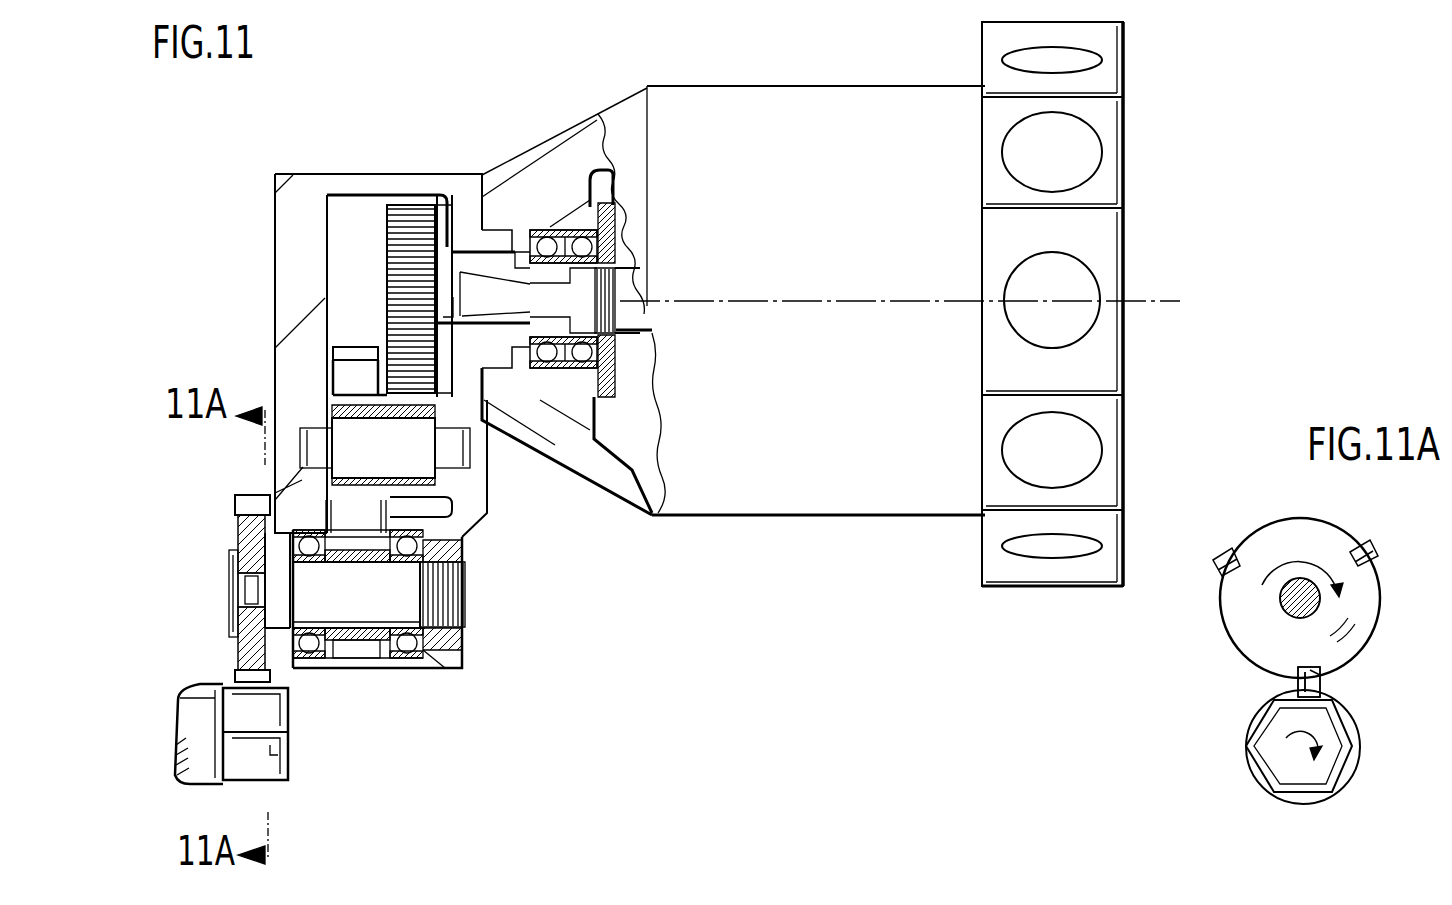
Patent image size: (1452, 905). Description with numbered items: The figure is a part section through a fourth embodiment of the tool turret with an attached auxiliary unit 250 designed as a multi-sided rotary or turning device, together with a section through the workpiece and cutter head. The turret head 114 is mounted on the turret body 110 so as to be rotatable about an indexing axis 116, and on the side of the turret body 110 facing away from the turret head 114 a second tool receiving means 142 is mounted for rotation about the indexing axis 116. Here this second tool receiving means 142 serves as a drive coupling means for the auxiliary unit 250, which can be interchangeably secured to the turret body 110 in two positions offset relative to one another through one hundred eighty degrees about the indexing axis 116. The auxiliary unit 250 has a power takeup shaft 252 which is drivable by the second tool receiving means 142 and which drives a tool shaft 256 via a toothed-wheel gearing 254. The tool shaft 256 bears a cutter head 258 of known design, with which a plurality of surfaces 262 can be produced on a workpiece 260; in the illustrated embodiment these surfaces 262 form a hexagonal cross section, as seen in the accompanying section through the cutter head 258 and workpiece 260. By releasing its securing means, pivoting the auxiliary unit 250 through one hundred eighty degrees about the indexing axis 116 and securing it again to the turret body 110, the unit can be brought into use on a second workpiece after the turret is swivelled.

In FIG. 11, the turret body 110 is at (832, 72).
In FIG. 11, the turret head 114 is at (1112, 77).
In FIG. 11, the indexing axis 116 is at (1090, 300).
In FIG. 11, the second tool receiving means 142 is at (523, 255).
In FIG. 11, the auxiliary unit 250 is at (260, 164).
In FIG. 11, the power takeup shaft 252 is at (472, 290).
In FIG. 11, the toothed-wheel gearing 254 is at (350, 332).
In FIG. 11, the tool shaft 256 is at (360, 614).
In FIG. 11, the cutter head 258 is at (245, 530).
In FIG. 11A, the cutter head 258 is at (1230, 608).
In FIG. 11, the workpiece 260 is at (188, 700).
In FIG. 11A, the workpiece 260 is at (1268, 752).
In FIG. 11, the surfaces 262 is at (269, 745).
In FIG. 11A, the surfaces 262 is at (1262, 710).